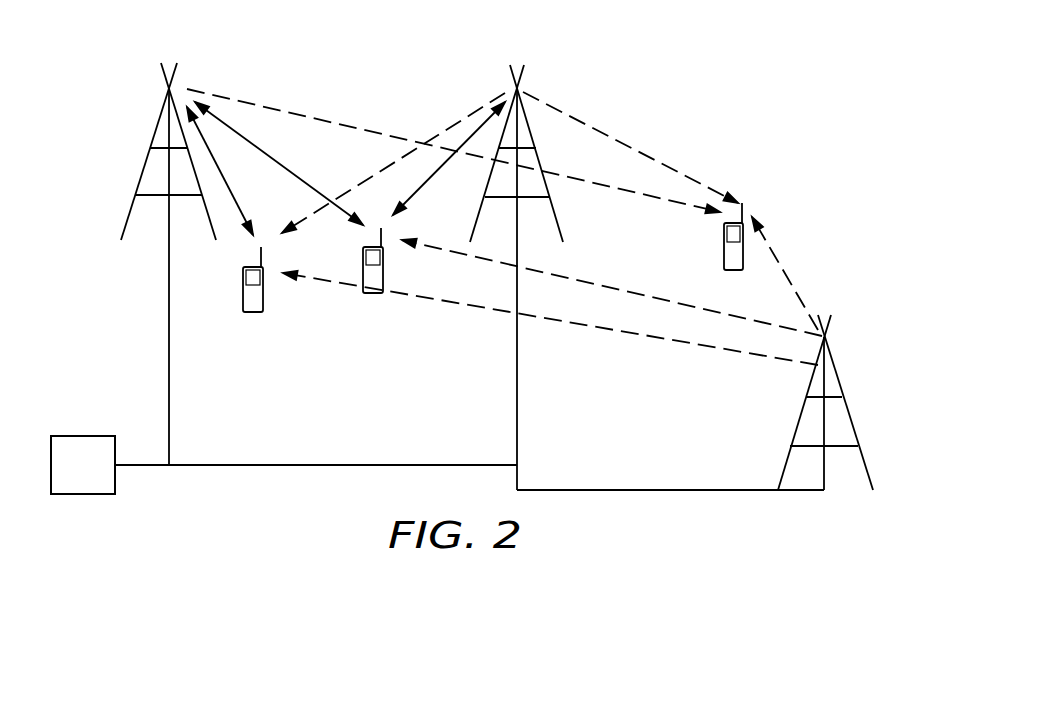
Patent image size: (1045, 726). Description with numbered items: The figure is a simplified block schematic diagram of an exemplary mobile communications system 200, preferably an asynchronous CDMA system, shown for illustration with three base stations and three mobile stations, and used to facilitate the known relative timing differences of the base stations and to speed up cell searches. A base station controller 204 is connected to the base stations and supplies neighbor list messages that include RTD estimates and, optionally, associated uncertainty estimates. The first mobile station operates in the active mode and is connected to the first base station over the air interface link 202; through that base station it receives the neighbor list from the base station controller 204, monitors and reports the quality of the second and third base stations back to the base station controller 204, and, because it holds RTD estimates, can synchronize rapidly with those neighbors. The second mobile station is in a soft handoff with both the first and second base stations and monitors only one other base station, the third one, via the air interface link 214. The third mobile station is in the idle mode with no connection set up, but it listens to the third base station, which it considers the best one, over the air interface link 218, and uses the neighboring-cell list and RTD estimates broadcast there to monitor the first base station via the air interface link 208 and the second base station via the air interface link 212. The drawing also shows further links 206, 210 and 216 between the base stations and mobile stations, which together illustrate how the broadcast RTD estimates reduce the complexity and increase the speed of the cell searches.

The mobile communications system 200 is at (778, 110).
The air interface link 202 is at (207, 142).
The BSC 204 is at (83, 435).
The link between BS1 and MS2 206 is at (250, 140).
The air interface link 208 is at (358, 128).
The link between BS2 and MS2 210 is at (480, 128).
The air interface link 212 is at (596, 131).
The air interface link 214 is at (605, 286).
The signal from BS3 to MS1 216 is at (633, 332).
The air interface link 218 is at (783, 267).